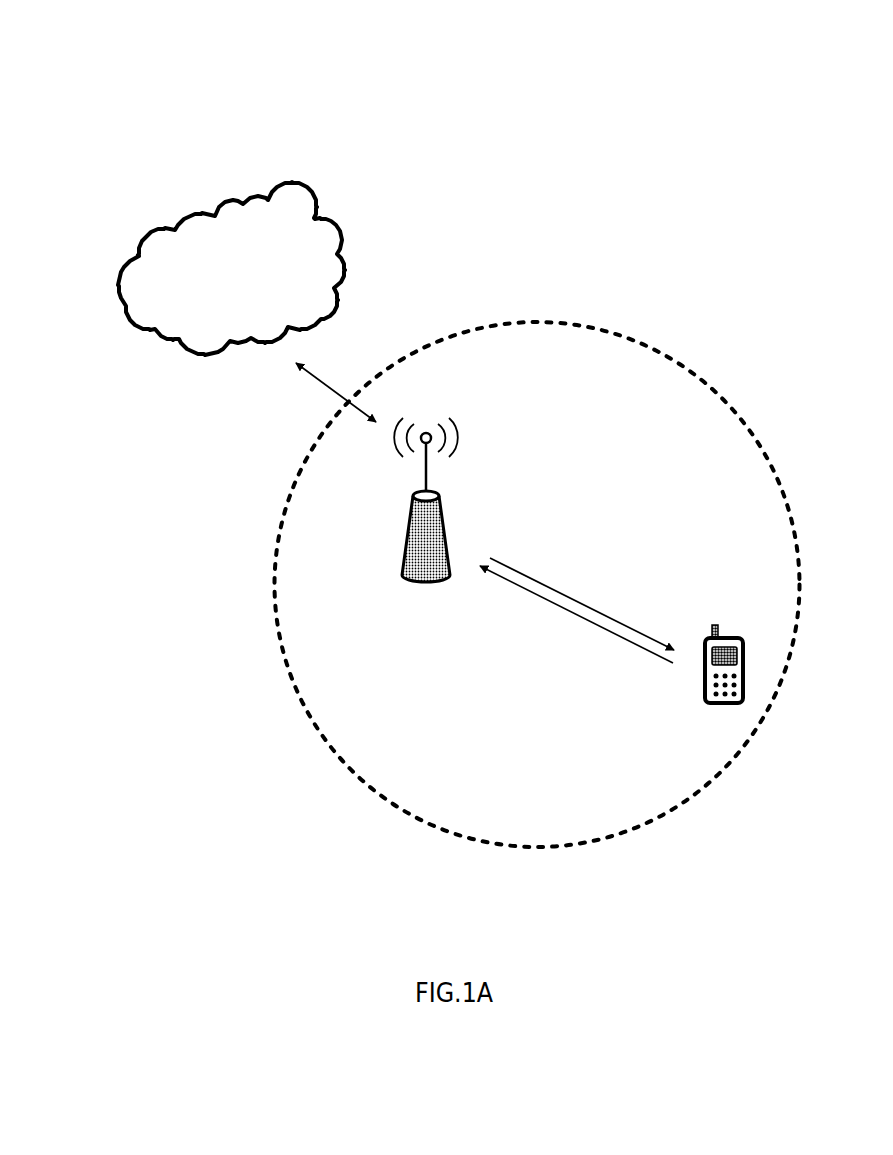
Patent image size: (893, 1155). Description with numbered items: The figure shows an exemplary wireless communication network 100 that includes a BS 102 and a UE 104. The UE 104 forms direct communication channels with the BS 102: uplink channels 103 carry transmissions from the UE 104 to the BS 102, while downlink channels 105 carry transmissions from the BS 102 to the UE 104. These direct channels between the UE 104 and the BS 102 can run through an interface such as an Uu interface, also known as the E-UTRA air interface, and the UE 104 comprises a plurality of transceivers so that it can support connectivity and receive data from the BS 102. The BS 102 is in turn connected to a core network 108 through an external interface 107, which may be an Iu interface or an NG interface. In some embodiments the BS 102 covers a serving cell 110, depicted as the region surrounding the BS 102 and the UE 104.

The wireless communication network 100 is at (98, 140).
The BS 102 is at (455, 486).
The direct communication (uplink) channels 103 is at (583, 617).
The UE 104 is at (725, 625).
The direct communication (downlink) channels 105 is at (540, 582).
The external interface 107 is at (335, 390).
The core network 108 is at (155, 255).
The serving cell 110 is at (457, 833).